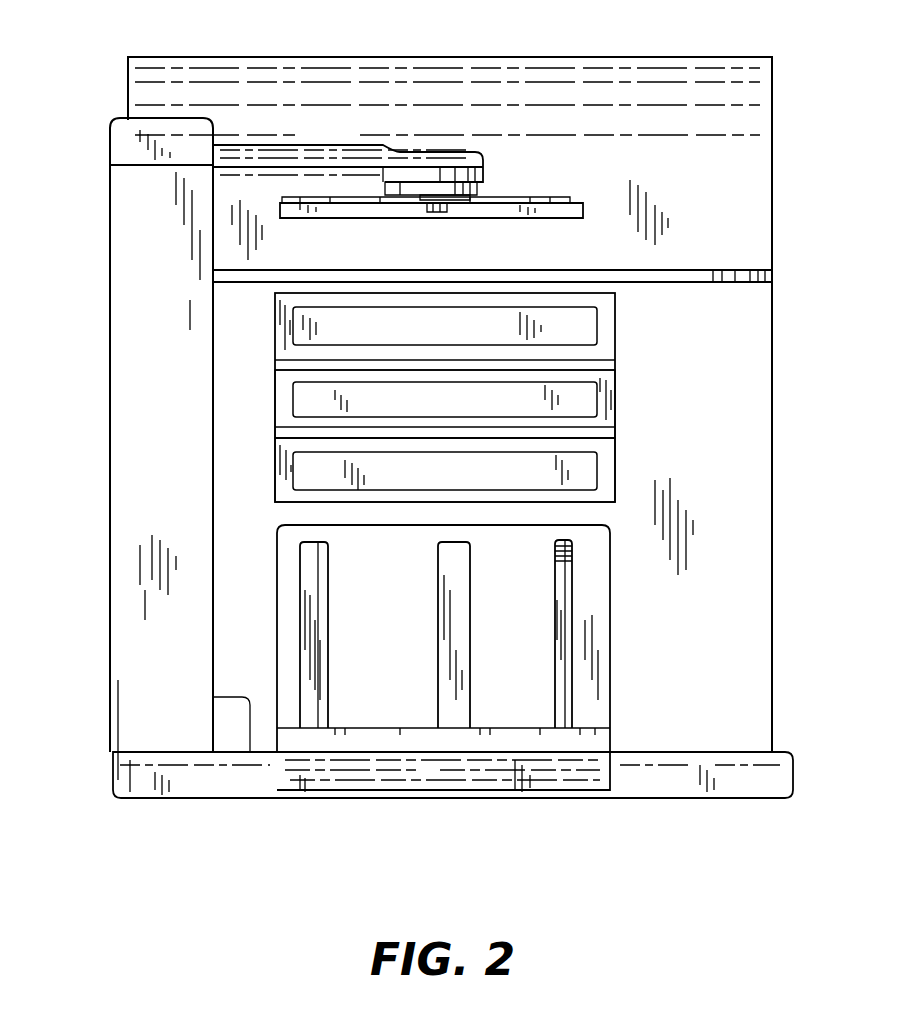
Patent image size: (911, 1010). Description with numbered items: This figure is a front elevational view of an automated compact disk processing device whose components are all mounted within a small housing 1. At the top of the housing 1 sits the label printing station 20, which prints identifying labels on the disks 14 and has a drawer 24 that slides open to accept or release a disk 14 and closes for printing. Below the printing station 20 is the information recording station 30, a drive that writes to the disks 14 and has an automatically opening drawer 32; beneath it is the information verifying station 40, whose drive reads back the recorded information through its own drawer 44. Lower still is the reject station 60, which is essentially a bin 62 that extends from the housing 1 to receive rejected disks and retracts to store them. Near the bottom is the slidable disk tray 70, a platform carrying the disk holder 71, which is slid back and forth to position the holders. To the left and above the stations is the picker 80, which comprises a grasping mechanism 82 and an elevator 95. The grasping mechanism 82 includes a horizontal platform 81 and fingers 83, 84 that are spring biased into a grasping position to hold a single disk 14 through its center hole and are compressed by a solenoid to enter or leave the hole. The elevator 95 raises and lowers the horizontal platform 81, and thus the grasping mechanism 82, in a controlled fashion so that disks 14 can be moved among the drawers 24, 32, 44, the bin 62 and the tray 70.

The housing 1 is at (760, 480).
The disk 14 is at (540, 200).
The label printing station 20 is at (760, 124).
The drawer 24 is at (560, 216).
The information recording station 30 is at (494, 397).
The drawer 32 is at (583, 326).
The information verifying station 40 is at (490, 404).
The drawer 44 is at (583, 398).
The reject station 60 is at (492, 466).
The bin 62 is at (588, 474).
The slidable disk tray 70 is at (497, 780).
The disk holder 71 is at (563, 628).
The picker 80 is at (75, 321).
The horizontal platform 81 is at (312, 148).
The grasping mechanism 82 is at (430, 183).
The finger 83 is at (432, 203).
The finger 84 is at (445, 208).
The elevator 95 is at (123, 400).